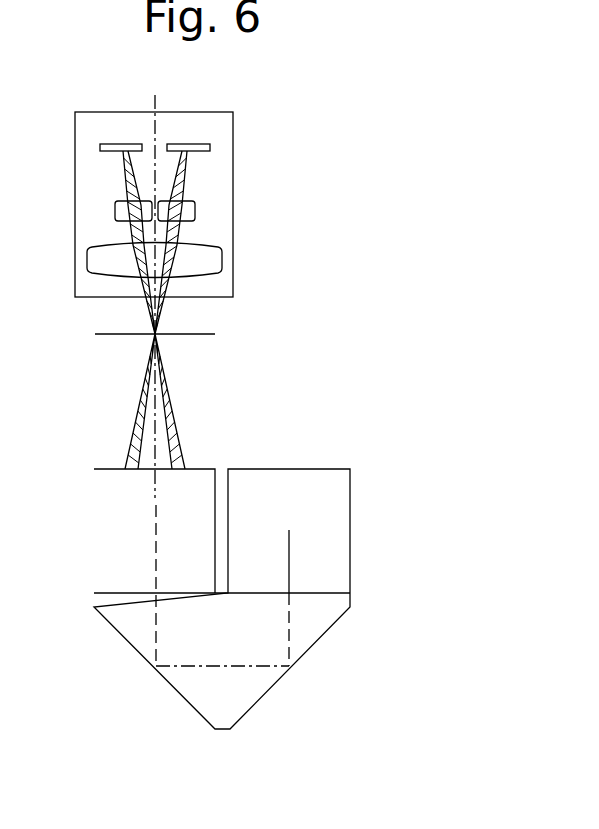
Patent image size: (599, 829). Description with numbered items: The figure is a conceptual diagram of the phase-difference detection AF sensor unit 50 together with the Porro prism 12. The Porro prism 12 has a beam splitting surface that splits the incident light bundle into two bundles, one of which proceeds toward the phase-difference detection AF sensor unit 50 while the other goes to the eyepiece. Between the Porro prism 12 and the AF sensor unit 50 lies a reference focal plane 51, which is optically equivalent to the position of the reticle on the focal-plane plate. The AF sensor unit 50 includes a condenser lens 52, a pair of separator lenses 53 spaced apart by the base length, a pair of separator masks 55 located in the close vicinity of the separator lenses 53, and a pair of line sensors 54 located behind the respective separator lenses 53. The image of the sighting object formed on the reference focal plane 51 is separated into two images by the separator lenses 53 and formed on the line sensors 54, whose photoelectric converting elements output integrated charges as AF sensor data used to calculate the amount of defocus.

The Porro prism 12 is at (410, 592).
The phase-difference detection AF sensor unit 50 is at (260, 138).
The reference focal plane 51 is at (193, 334).
The condenser lens 52 is at (212, 262).
The separator lenses 53 is at (116, 209).
The line sensors 54 is at (129, 143).
The separator masks 55 is at (118, 226).